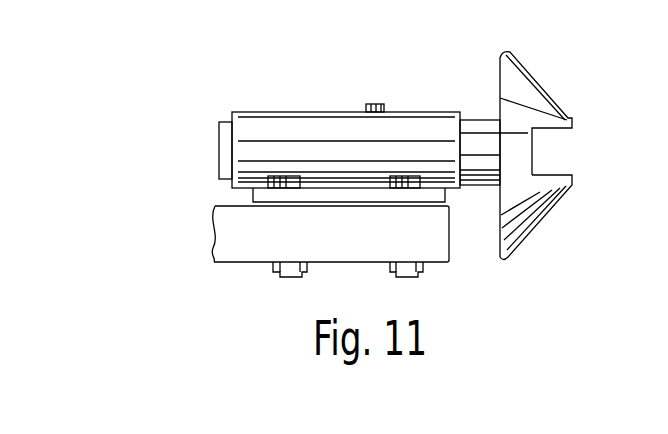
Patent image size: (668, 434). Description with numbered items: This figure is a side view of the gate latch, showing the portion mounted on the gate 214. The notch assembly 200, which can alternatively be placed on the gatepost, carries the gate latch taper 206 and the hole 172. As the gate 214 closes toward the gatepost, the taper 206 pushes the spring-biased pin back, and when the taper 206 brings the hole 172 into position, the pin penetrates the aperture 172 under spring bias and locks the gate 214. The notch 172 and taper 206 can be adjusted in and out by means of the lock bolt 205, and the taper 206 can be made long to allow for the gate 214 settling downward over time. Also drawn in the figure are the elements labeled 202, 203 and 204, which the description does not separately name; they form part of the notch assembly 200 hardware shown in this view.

The notch assembly 200 is at (212, 105).
The lower wing of wing nut 202 is at (503, 258).
The end cap 203 is at (218, 162).
The cylinder housing 204 is at (298, 112).
The lock bolt 205 is at (357, 78).
The gate latch taper 206 is at (550, 78).
The hole 172 is at (538, 155).
The gate 214 is at (220, 247).